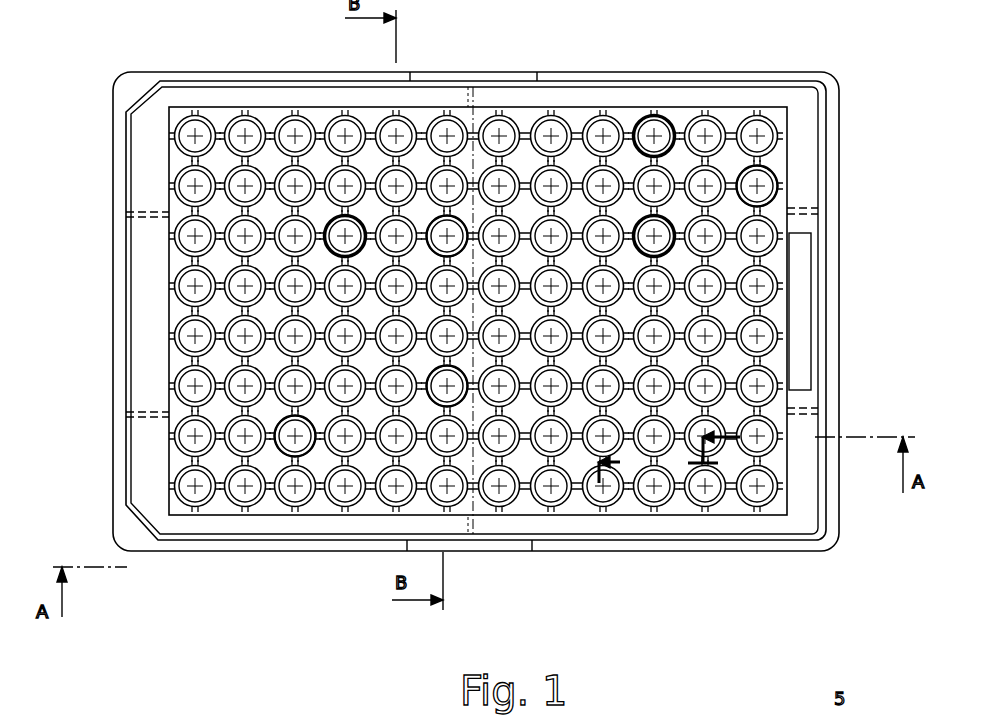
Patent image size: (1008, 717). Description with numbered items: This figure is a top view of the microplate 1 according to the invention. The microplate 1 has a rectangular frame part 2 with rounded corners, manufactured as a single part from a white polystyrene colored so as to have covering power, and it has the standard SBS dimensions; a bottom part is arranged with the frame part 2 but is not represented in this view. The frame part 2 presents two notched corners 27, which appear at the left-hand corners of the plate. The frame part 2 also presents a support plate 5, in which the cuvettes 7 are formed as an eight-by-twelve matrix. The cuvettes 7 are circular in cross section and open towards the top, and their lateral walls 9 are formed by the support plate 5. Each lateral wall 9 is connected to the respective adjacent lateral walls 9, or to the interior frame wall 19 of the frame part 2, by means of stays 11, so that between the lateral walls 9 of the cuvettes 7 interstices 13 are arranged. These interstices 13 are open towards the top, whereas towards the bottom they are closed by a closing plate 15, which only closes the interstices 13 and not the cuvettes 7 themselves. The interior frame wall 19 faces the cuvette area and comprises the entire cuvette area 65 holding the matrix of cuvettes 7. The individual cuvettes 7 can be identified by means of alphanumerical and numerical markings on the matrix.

The microplate 1 is at (735, 562).
The frame part 2 is at (833, 128).
The support plate 5 is at (802, 188).
The cuvette 7 is at (763, 293).
The lateral wall 9 is at (777, 372).
The stay 11 is at (172, 520).
The interstice 13 is at (623, 462).
The closing plate 15 is at (632, 118).
The interior frame wall 19 is at (782, 470).
The notched corner 27 is at (145, 100).
The cuvette area 65 is at (598, 195).